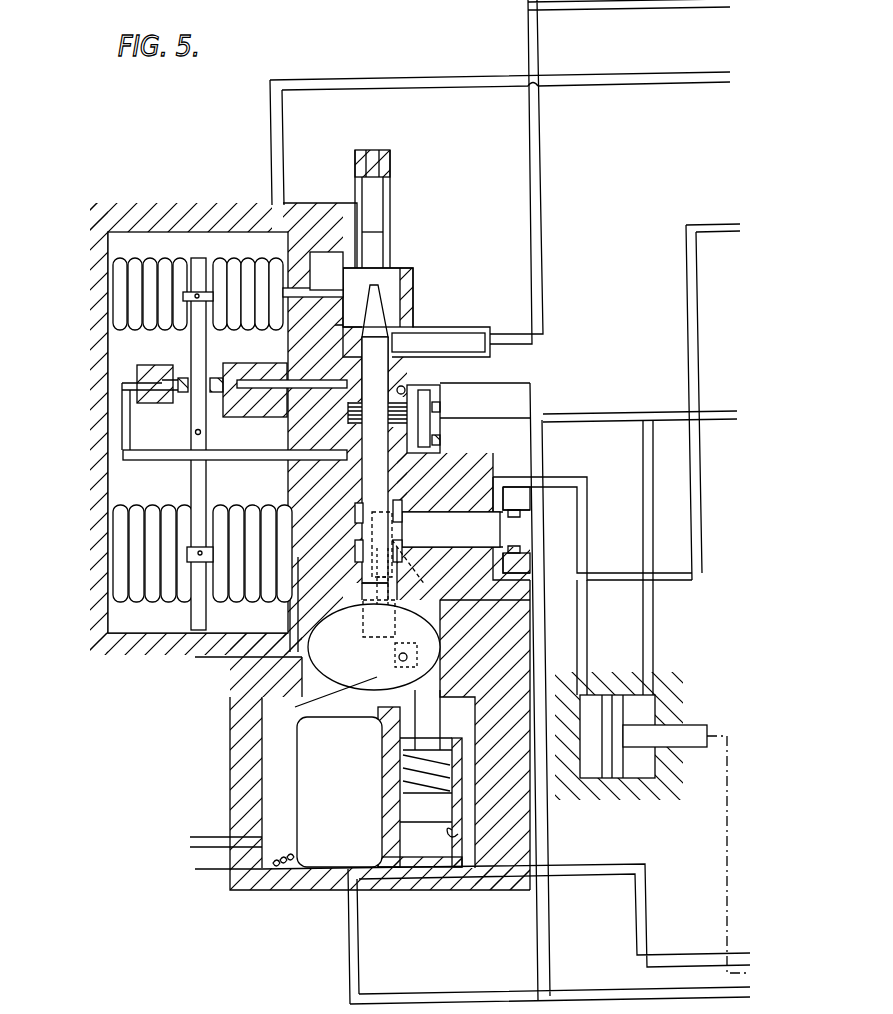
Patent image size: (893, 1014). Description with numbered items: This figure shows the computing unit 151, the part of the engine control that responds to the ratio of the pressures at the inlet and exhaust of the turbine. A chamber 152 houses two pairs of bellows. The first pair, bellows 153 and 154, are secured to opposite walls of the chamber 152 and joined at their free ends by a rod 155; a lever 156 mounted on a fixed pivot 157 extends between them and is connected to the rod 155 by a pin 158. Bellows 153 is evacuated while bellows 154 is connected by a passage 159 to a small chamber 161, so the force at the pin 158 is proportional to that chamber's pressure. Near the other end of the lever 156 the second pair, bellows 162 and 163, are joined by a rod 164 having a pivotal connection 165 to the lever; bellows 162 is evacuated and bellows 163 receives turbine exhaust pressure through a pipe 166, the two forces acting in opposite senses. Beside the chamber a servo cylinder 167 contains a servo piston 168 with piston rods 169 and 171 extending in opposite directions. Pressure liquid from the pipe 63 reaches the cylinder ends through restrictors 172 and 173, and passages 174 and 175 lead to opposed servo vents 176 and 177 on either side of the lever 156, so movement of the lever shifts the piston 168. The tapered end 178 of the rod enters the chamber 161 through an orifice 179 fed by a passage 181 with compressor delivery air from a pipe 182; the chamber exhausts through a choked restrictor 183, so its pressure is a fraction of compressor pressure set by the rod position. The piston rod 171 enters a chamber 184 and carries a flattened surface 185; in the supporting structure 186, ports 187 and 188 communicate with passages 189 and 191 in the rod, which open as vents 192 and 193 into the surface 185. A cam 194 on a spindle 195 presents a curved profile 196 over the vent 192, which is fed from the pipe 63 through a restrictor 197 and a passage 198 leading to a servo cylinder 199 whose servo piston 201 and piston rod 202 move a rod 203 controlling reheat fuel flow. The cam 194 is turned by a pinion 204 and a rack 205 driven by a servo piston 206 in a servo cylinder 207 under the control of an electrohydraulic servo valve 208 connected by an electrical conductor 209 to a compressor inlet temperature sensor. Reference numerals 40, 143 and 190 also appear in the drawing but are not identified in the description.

The conduit 40 is at (678, 73).
The pipe 63 is at (613, 415).
The conduit 143 is at (701, 224).
The computing unit 151 is at (217, 212).
The chamber 152 is at (122, 232).
The bellows 153 is at (128, 322).
The bellows 154 is at (247, 285).
The rod 155 is at (193, 291).
The lever 156 is at (192, 345).
The fixed pivot 157 is at (195, 433).
The pin 158 is at (197, 291).
The passage 159 is at (319, 292).
The small chamber 161 is at (400, 280).
The bellows 162 is at (153, 520).
The bellows 163 is at (248, 518).
The rod 164 is at (193, 562).
The pivotal connection 165 is at (205, 562).
The pipe 166 is at (330, 615).
The servo cylinder 167 is at (405, 388).
The servo piston 168 is at (388, 420).
The piston rod 169 is at (378, 351).
The piston rod 171 is at (380, 490).
The restrictor 172 is at (440, 437).
The restrictor 173 is at (440, 400).
The passage 174 is at (255, 380).
The passage 175 is at (278, 450).
The servo vent 176 is at (215, 378).
The servo vent 177 is at (178, 392).
The tapered end 178 is at (382, 297).
The orifice 179 is at (393, 318).
The passage 181 is at (467, 337).
The pipe 182 is at (542, 290).
The restrictor 183 is at (390, 166).
The chamber 184 is at (470, 618).
The flattened surface 185 is at (367, 598).
The supporting structure 186 is at (410, 500).
The port 187 is at (400, 520).
The port 188 is at (394, 562).
The passage 189 is at (432, 568).
The valve 190 is at (533, 530).
The passage 191 is at (394, 582).
The vent 192 is at (370, 627).
The vent 193 is at (420, 607).
The cam 194 is at (322, 699).
The spindle 195 is at (399, 657).
The curved profile 196 is at (470, 646).
The restrictor 197 is at (512, 518).
The passage 198 is at (570, 487).
The servo cylinder 199 is at (596, 778).
The servo piston 201 is at (622, 760).
The piston rod 202 is at (695, 735).
The rod 203 is at (725, 873).
The pinion 204 is at (405, 776).
The rack 205 is at (430, 712).
The servo piston 206 is at (420, 803).
The servo cylinder 207 is at (460, 836).
The electrohydraulic servo valve 208 is at (325, 848).
The electrical conductor 209 is at (221, 869).